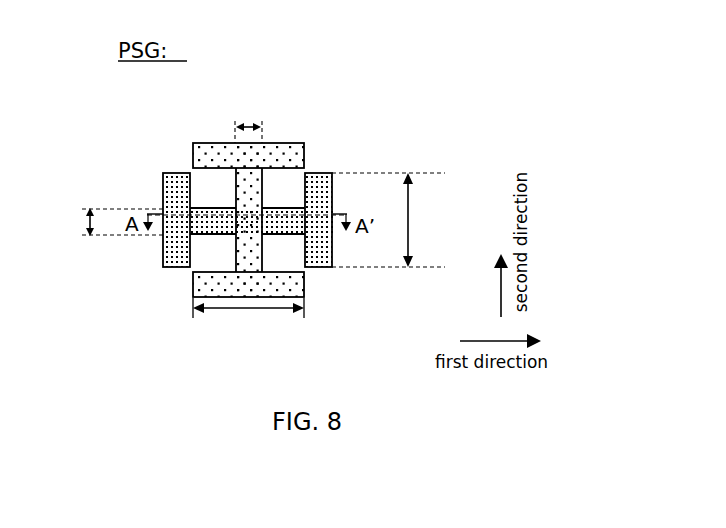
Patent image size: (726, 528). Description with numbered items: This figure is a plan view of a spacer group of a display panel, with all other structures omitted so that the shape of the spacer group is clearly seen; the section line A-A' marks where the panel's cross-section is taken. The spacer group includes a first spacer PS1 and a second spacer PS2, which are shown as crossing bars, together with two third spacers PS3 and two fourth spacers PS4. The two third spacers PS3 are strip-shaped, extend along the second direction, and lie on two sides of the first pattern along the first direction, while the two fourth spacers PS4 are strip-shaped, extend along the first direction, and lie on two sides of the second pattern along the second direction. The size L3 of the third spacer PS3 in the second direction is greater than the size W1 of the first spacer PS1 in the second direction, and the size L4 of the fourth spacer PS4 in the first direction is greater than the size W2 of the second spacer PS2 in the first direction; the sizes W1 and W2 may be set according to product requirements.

The first spacer PS1 is at (280, 231).
The second spacer PS2 is at (237, 180).
The third spacer PS3 is at (333, 173).
The fourth spacer PS4 is at (210, 143).
The size of the first spacer in the second direction W1 is at (106, 222).
The size of the second spacer in the first direction W2 is at (248, 118).
The size of the third spacer in the second direction L3 is at (388, 220).
The size of the fourth spacer in the first direction L4 is at (248, 318).